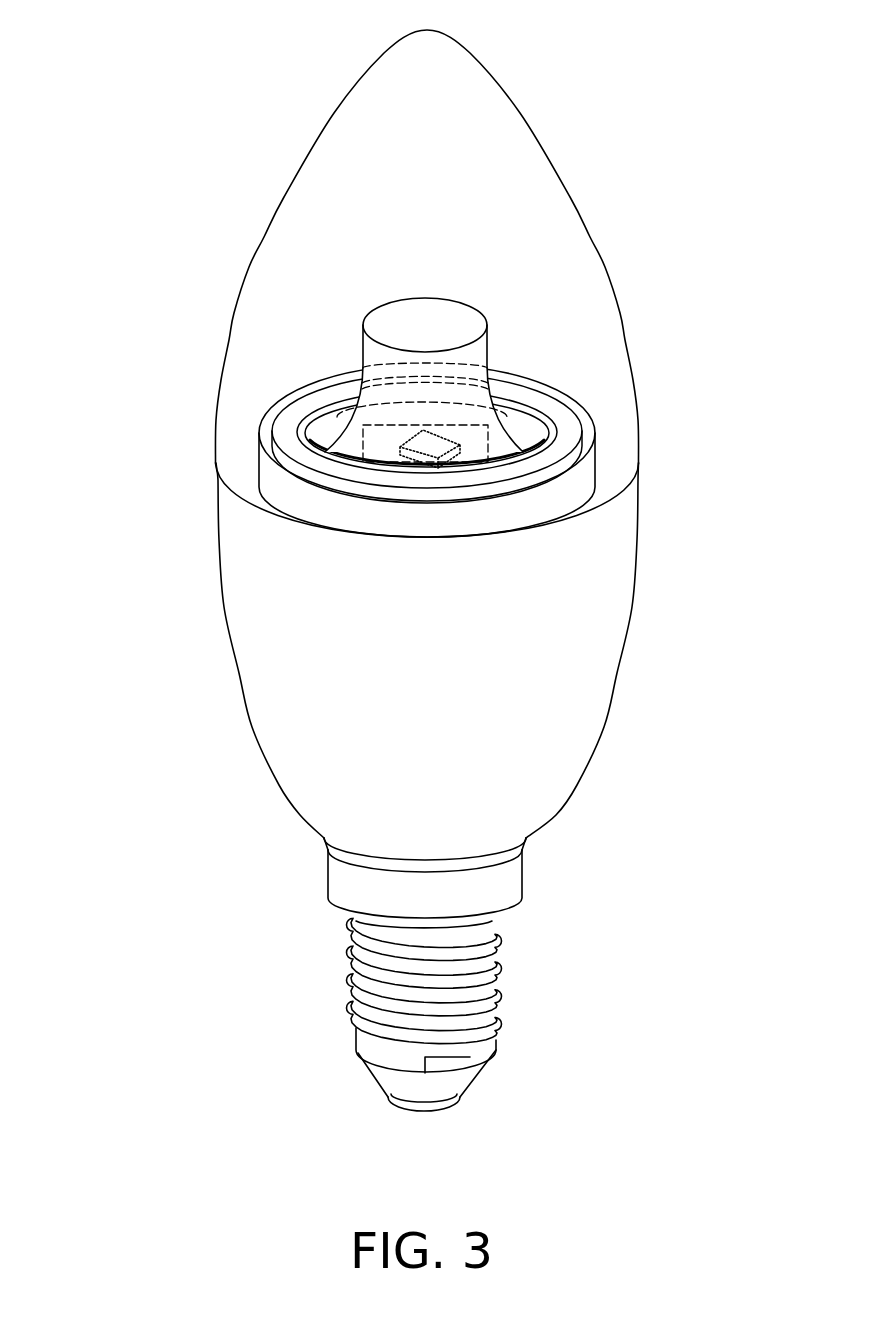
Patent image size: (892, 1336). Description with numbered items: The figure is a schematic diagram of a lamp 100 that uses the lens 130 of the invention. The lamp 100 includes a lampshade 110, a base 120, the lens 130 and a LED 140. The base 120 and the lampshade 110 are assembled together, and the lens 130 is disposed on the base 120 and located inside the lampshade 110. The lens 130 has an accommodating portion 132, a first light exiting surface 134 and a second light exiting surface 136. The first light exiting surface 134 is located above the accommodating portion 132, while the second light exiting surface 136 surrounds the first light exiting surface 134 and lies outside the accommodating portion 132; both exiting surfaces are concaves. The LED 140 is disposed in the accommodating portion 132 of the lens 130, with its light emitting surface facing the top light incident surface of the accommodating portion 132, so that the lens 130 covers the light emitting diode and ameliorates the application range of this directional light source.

The lamp 100 is at (741, 1160).
The lampshade 110 is at (333, 212).
The base 120 is at (295, 604).
The lens 130 is at (134, 218).
The accommodating portion 132 is at (387, 447).
The first light exiting surface 134 is at (407, 330).
The second light exiting surface 136 is at (360, 373).
The LED 140 is at (413, 458).